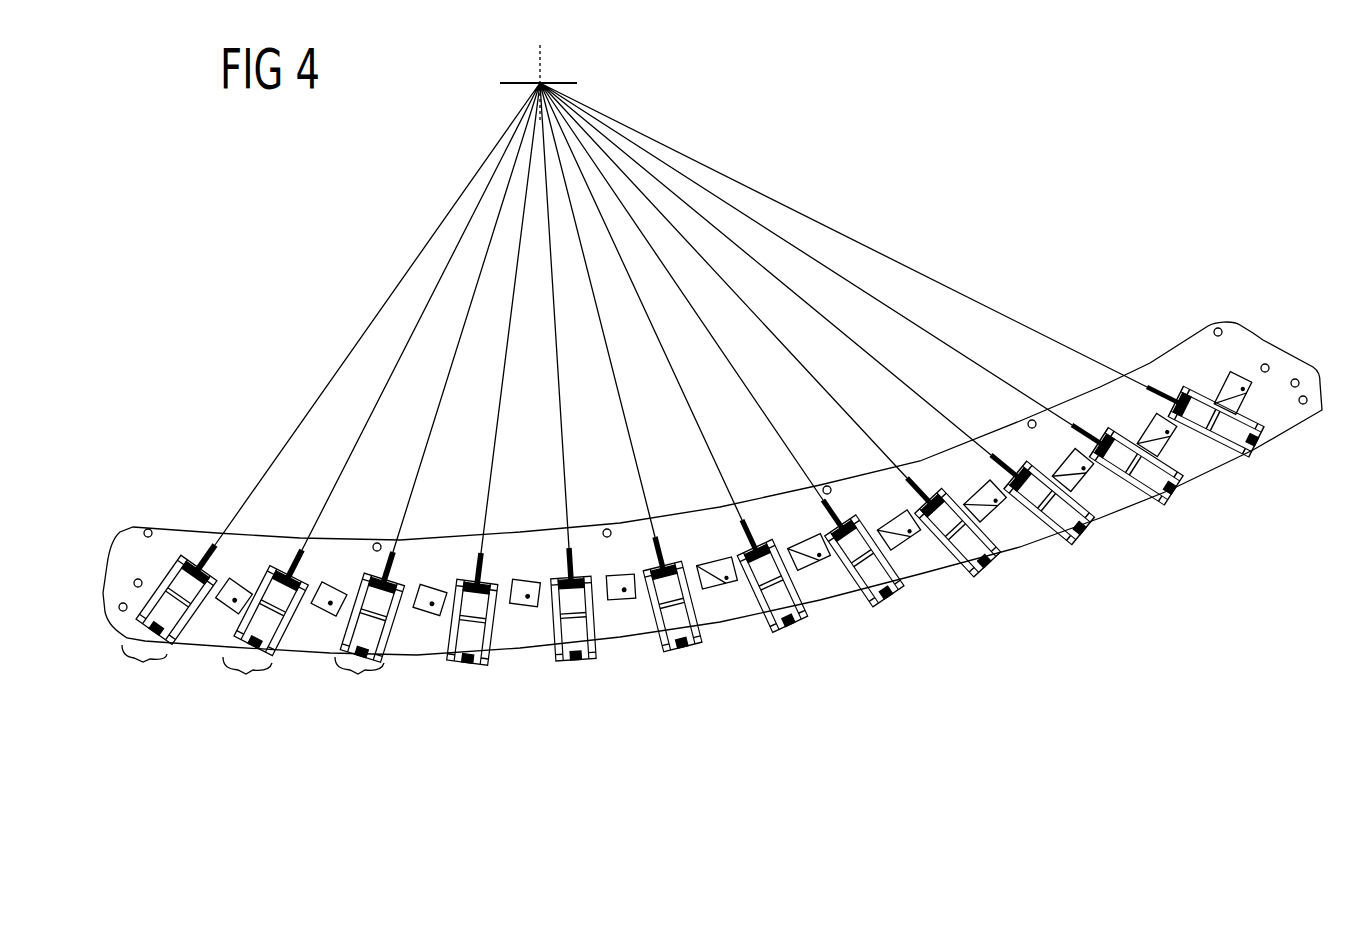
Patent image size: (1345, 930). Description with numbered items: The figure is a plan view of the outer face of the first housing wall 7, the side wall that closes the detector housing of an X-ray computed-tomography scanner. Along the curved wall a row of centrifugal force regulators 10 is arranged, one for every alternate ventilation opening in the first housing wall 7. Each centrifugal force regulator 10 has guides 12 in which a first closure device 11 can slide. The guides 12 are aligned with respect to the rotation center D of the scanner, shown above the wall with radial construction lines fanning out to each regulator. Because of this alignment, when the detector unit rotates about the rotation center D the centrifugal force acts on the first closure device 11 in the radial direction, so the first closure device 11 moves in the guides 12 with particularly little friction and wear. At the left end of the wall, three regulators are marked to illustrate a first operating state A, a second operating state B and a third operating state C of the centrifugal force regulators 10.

The first housing wall 7 is at (1183, 360).
The centrifugal force regulator 10 is at (712, 487).
The first closure device 11 is at (1197, 407).
The guides 12 is at (752, 588).
The rotation center D is at (541, 82).
The first operating state A is at (144, 674).
The second operating state B is at (247, 683).
The third operating state C is at (359, 685).